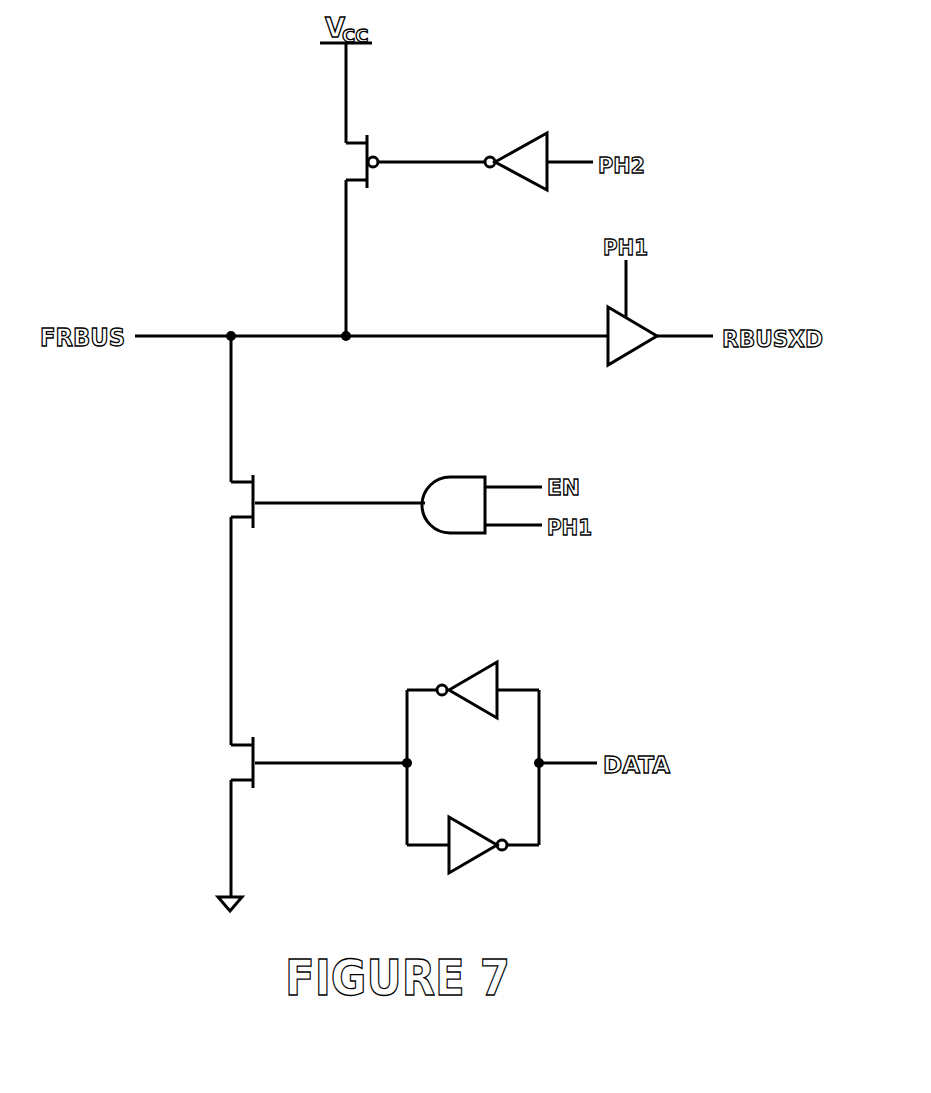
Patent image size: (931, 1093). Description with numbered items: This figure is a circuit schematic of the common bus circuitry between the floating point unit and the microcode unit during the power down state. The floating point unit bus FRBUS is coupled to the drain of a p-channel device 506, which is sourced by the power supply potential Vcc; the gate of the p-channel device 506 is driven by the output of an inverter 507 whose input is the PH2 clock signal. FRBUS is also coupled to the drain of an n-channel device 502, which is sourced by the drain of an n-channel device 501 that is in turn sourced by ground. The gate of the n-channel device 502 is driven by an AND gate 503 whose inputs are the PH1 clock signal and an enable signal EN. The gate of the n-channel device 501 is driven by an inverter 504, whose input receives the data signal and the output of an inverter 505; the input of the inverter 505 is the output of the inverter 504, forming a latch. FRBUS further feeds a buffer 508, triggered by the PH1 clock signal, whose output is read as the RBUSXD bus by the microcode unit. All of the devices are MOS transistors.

The n-channel device 501 is at (235, 763).
The n-channel device 502 is at (235, 501).
The AND gate 503 is at (462, 477).
The inverter 504 is at (470, 673).
The inverter 505 is at (478, 806).
The p-channel device 506 is at (347, 162).
The inverter 507 is at (523, 150).
The buffer 508 is at (641, 329).